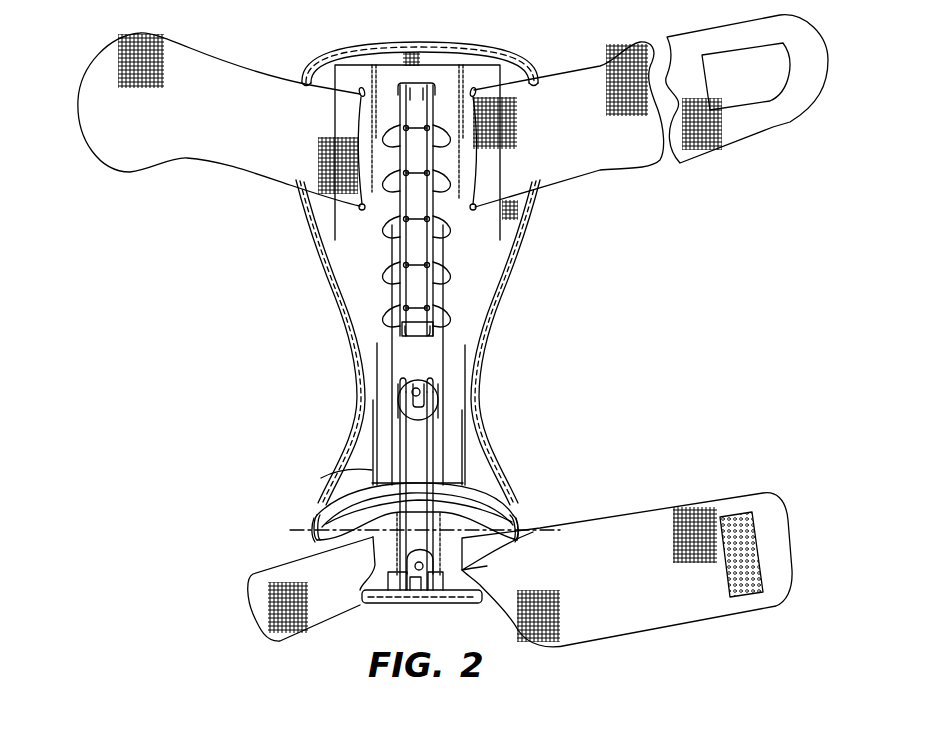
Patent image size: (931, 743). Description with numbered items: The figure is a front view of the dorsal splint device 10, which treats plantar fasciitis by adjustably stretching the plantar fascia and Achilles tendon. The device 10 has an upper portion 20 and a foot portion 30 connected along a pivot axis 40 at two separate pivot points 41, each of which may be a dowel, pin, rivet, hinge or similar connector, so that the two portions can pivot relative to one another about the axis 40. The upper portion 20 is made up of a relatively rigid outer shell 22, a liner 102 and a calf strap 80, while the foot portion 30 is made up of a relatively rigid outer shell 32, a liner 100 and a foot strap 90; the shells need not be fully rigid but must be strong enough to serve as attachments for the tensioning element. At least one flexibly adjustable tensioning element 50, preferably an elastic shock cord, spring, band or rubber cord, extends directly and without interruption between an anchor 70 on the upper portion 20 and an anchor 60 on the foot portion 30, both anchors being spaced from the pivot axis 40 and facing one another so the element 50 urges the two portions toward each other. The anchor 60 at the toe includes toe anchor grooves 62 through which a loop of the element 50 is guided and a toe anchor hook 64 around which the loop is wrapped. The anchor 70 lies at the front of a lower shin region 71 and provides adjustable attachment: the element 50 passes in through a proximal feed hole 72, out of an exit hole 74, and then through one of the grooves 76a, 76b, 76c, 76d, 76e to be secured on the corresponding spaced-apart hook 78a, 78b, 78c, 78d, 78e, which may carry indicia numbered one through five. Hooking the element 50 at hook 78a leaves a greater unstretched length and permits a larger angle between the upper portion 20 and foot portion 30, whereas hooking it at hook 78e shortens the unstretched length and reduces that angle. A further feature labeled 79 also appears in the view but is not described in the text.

The dorsal splint device 10 is at (95, 218).
The upper portion 20 is at (500, 65).
The outer shell 22 is at (335, 73).
The foot portion 30 is at (528, 519).
The outer shell 32 is at (412, 562).
The pivot axis 40 is at (312, 538).
The pivot points 41 is at (310, 522).
The tensioning element 50 is at (340, 281).
The anchor 60 is at (397, 609).
The toe anchor grooves 62 is at (430, 597).
The toe anchor hook 64 is at (495, 520).
The anchor 70 is at (272, 202).
The lower shin region 71 is at (243, 327).
The proximal feed hole 72 is at (443, 423).
The exit hole 74 is at (412, 110).
The groove 76a is at (414, 112).
The groove 76b is at (415, 156).
The groove 76c is at (400, 212).
The groove 76d is at (400, 258).
The groove 76e is at (412, 300).
The hook 78a is at (420, 158).
The hook 78b is at (430, 210).
The hook 78c is at (440, 232).
The hook 78d is at (425, 280).
The hook 78e is at (420, 328).
The adjustment post 79 is at (430, 258).
The calf strap 80 is at (812, 100).
The foot strap 90 is at (770, 493).
The liner 100 is at (322, 476).
The liner 102 is at (442, 42).